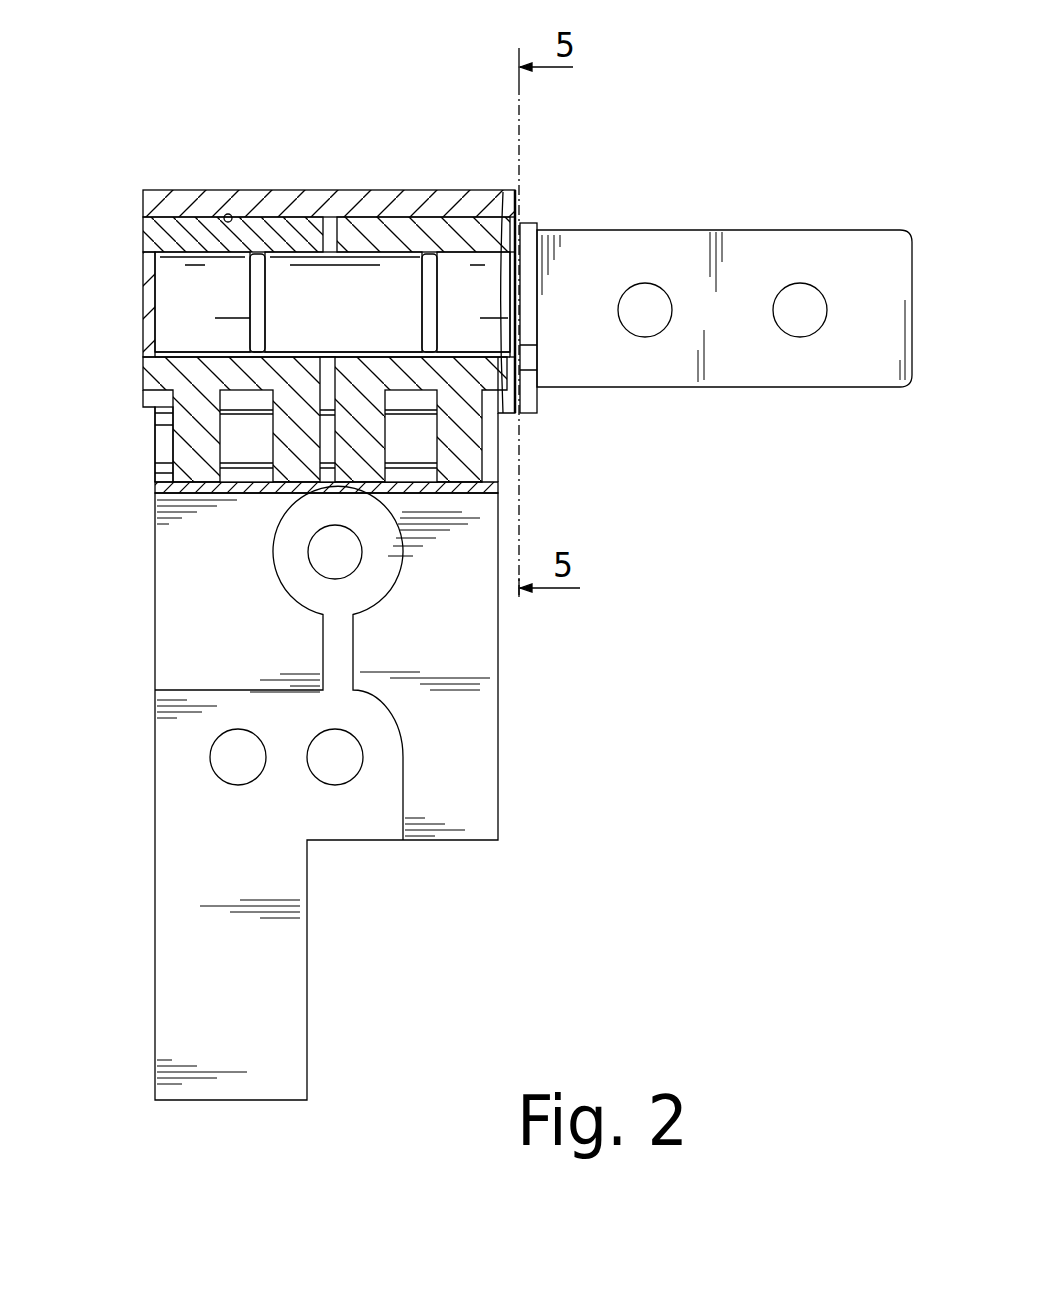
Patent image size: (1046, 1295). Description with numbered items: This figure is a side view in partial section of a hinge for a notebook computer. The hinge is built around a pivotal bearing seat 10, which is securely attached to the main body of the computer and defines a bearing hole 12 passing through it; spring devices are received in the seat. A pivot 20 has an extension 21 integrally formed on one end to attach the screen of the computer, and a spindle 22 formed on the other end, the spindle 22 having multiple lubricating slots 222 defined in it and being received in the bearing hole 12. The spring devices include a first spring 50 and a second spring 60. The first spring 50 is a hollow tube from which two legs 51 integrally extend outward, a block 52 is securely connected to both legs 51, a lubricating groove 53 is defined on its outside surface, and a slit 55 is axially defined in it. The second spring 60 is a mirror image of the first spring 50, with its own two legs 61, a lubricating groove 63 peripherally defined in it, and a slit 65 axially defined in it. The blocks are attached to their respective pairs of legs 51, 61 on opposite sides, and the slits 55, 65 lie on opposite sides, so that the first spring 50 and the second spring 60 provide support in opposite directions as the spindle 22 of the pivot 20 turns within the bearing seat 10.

The pivotal bearing seat 10 is at (485, 663).
The bearing hole 12 is at (500, 197).
The pivot 20 is at (700, 147).
The extension 21 is at (713, 250).
The spindle 22 is at (173, 323).
The first spring 50 is at (456, 197).
The legs 51 is at (487, 432).
The block 52 is at (485, 473).
The lubricating groove 53 is at (360, 215).
The slit 55 is at (407, 403).
The second spring 60 is at (172, 222).
The legs 61 is at (185, 432).
The lubricating groove 63 is at (229, 216).
The slit 65 is at (263, 400).
The lubricating slots 222 is at (418, 305).